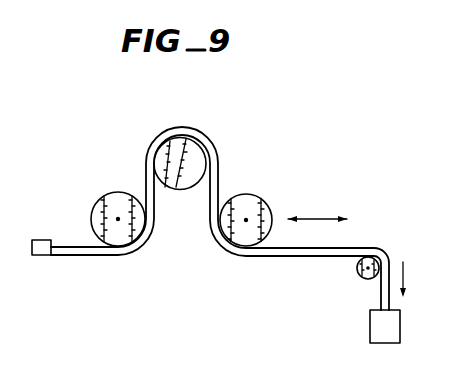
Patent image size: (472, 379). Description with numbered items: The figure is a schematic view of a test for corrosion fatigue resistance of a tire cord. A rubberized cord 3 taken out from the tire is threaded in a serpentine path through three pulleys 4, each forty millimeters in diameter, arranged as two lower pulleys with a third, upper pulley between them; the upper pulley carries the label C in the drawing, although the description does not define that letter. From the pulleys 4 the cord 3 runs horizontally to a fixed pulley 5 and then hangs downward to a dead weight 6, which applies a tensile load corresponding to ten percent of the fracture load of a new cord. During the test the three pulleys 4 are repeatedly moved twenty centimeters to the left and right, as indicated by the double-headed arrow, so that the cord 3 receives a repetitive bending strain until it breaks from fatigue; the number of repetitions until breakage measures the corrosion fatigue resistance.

The rubberized cord 3 is at (282, 258).
The pulleys 4 is at (156, 163).
The roller C is at (180, 164).
The fixed pulley 5 is at (375, 247).
The dead weight 6 is at (400, 323).